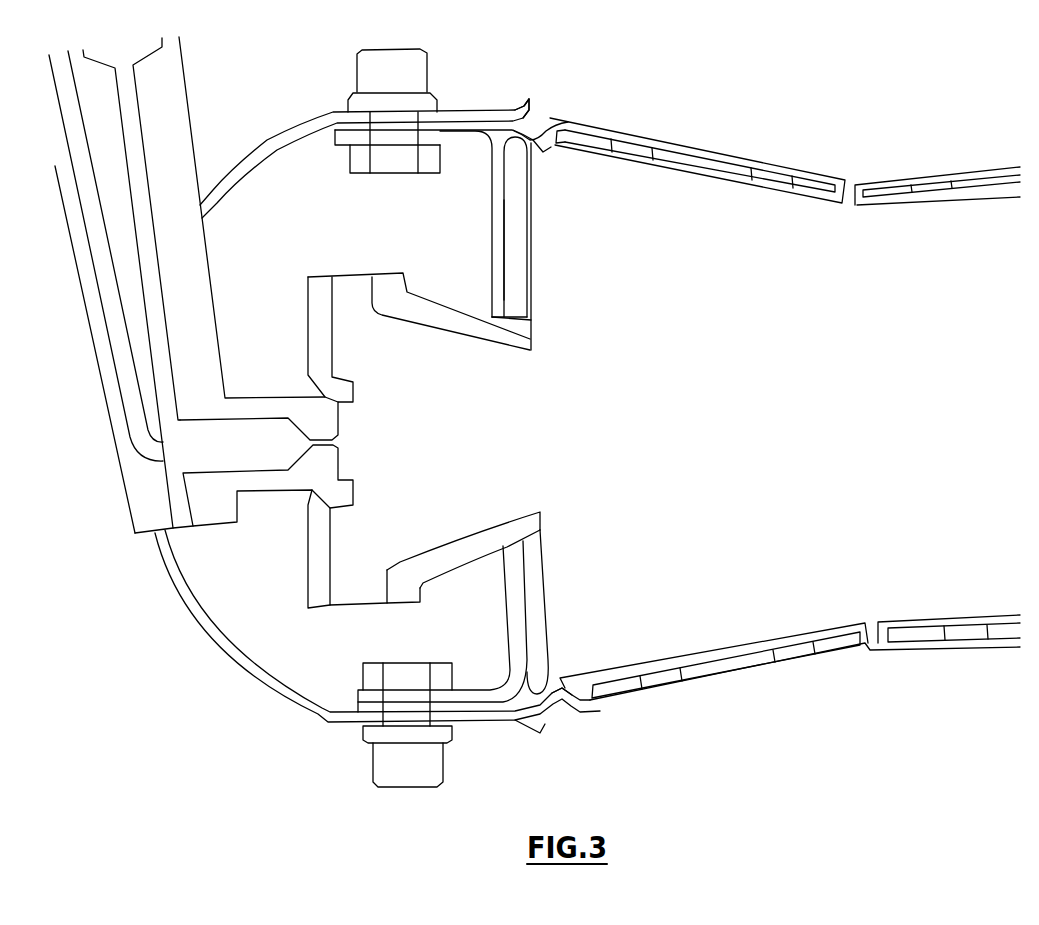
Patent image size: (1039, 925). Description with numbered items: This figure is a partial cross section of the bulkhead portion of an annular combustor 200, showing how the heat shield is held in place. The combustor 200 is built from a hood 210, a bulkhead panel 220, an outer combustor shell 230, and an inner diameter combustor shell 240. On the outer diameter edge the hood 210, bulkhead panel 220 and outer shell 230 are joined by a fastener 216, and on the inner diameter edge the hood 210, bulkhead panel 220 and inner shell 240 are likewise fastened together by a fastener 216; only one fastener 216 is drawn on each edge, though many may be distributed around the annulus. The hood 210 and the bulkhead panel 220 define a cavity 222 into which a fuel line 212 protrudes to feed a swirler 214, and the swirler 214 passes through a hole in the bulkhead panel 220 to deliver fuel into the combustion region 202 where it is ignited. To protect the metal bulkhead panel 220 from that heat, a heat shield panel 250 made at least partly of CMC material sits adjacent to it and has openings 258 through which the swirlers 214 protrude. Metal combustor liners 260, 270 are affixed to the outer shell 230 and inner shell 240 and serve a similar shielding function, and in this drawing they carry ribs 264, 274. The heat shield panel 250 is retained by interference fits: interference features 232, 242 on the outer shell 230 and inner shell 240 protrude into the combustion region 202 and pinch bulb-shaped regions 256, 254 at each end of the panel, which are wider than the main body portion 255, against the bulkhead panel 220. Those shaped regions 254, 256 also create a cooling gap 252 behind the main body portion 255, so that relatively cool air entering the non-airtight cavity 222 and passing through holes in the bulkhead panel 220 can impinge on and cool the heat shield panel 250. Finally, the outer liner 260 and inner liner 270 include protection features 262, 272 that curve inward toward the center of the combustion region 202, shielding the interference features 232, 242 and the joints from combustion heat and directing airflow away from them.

The annular combustor 200 is at (732, 78).
The combustion region 202 is at (891, 411).
The hood 210 is at (263, 157).
The fuel line 212 is at (170, 133).
The swirler 214 is at (447, 332).
The fastener 216 is at (415, 73).
The bulkhead panel 220 is at (493, 225).
The cavity 222 is at (418, 211).
The outer combustor shell 230 is at (785, 150).
The interference feature 232 is at (537, 100).
The inner diameter combustor shell 240 is at (617, 688).
The interference feature 242 is at (565, 700).
The heat shield panel 250 is at (548, 560).
The cooling gap 252 is at (503, 260).
The shaped region 254 is at (550, 676).
The main body portion 255 is at (515, 247).
The shaped region 256 is at (515, 153).
The opening 258 is at (531, 328).
The outer diameter liner 260 is at (712, 181).
The protection feature 262 is at (543, 150).
The panel core ribs 264 is at (635, 147).
The inner diameter liner 270 is at (790, 663).
The protection feature 272 is at (565, 690).
The lower panel core ribs 274 is at (660, 680).